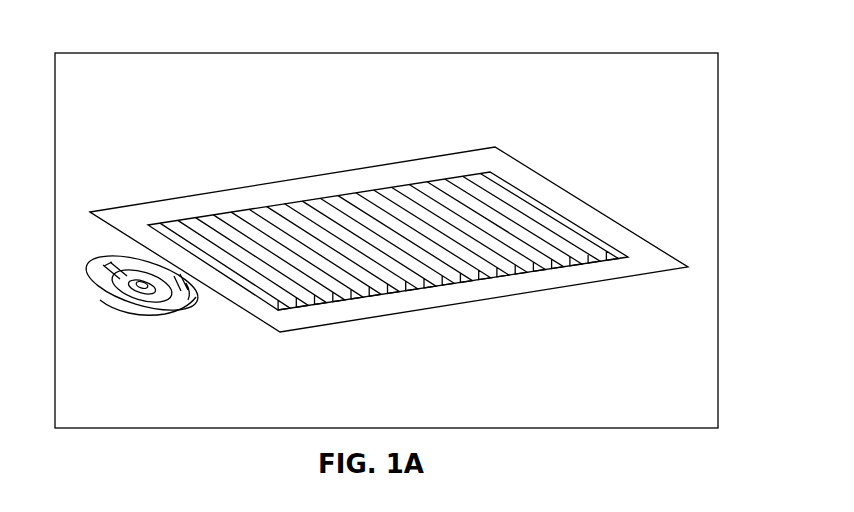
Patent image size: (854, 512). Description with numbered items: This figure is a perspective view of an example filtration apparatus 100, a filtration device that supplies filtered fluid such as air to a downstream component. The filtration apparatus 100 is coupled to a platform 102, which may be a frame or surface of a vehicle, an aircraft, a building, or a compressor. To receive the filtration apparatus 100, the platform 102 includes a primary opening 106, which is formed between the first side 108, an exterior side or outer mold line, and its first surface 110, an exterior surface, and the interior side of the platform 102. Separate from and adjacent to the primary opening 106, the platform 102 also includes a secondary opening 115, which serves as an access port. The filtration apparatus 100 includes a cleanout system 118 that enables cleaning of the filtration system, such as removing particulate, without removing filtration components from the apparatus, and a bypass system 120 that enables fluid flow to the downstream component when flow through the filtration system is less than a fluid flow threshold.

The filtration apparatus 100 is at (287, 168).
The platform 102 is at (450, 72).
The primary opening 106 is at (584, 200).
The first side 108 is at (693, 368).
The first surface 110 is at (548, 414).
The secondary opening 115 is at (192, 307).
The cleanout system 118 is at (147, 303).
The bypass system 120 is at (292, 289).